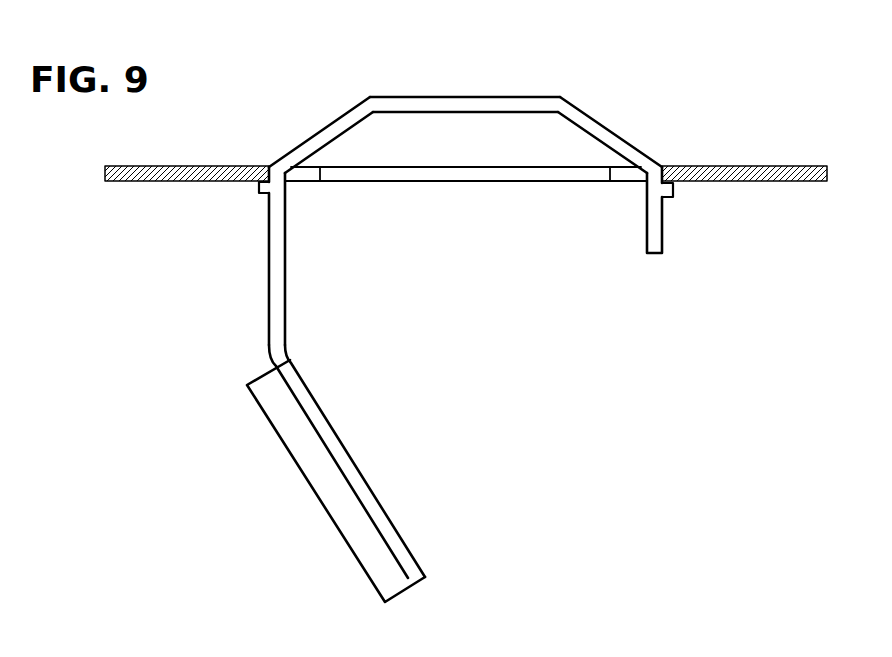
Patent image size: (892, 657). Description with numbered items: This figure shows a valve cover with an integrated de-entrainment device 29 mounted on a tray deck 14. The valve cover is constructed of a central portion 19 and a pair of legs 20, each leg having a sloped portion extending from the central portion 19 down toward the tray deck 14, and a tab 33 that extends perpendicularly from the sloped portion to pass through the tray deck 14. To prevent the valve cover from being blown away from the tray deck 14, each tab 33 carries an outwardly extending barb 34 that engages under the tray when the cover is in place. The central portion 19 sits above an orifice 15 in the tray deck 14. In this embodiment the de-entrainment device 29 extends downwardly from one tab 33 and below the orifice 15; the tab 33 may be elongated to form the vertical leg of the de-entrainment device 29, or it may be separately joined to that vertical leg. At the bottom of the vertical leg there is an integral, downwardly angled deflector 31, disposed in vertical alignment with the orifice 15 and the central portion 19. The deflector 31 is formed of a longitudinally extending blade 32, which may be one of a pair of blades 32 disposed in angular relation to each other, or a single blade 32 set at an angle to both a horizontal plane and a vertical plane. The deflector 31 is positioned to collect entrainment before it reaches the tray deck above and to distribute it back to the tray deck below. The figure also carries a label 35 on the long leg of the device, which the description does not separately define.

The tray deck 14 is at (752, 167).
The orifice 15 is at (472, 177).
The central portion 19 is at (410, 97).
The legs 20 is at (325, 130).
The de-entrainment device 29 is at (244, 304).
The deflector 31 is at (376, 467).
The blade 32 is at (283, 422).
The tab 33 is at (655, 243).
The barb 34 is at (257, 188).
The long leg 35 is at (278, 227).